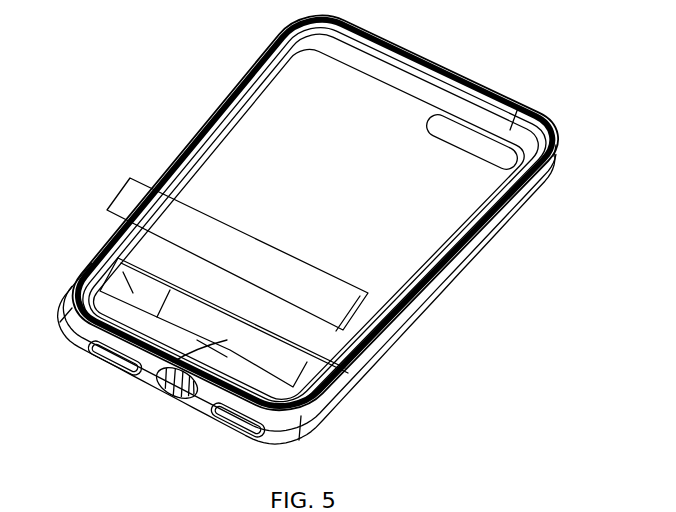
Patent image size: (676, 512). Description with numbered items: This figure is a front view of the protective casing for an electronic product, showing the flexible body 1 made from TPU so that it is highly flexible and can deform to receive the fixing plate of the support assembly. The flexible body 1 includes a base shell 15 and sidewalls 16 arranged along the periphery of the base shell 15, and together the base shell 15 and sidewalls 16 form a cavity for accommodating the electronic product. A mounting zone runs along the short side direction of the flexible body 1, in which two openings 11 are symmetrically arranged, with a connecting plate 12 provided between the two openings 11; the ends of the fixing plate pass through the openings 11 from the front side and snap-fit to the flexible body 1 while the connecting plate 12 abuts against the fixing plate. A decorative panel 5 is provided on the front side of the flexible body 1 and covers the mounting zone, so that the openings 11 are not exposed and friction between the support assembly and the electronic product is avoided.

The flexible body 1 is at (168, 8).
The decorative panel 5 is at (160, 212).
The openings 11 is at (137, 277).
The connecting plate 12 is at (181, 398).
The base shell 15 is at (245, 152).
The sidewalls 16 is at (265, 78).